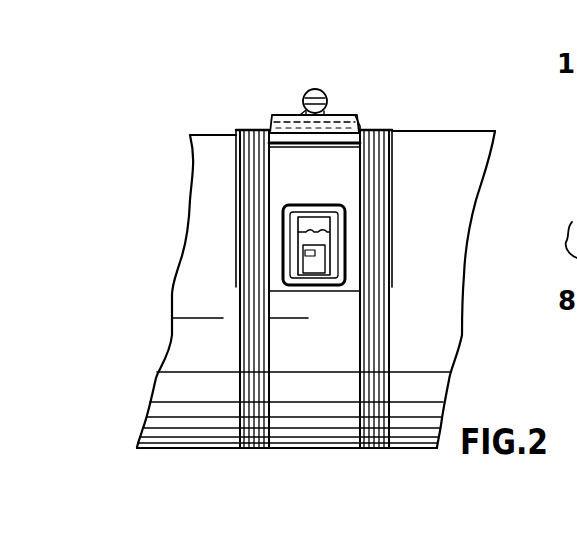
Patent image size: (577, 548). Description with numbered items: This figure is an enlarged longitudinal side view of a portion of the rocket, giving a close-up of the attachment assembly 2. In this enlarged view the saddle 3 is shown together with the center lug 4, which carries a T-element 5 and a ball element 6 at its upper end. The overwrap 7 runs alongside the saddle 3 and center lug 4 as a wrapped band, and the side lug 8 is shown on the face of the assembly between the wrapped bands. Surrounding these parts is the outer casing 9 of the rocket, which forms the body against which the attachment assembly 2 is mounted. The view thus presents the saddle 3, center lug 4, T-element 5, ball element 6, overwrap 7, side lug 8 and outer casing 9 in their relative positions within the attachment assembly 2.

The attachment assembly 2 is at (385, 120).
The saddle 3 is at (345, 188).
The center lug 4 is at (356, 123).
The T-element 5 is at (306, 117).
The ball element 6 is at (304, 92).
The overwrap 7 is at (245, 140).
The side lug 8 is at (293, 232).
The outer casing 9 is at (476, 156).